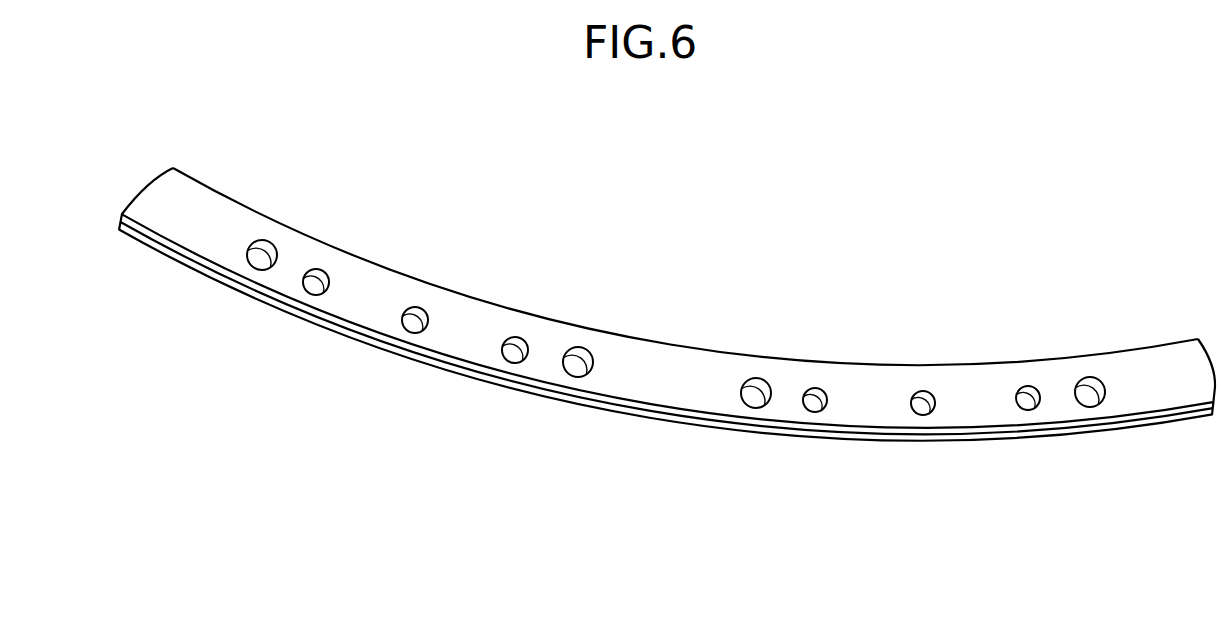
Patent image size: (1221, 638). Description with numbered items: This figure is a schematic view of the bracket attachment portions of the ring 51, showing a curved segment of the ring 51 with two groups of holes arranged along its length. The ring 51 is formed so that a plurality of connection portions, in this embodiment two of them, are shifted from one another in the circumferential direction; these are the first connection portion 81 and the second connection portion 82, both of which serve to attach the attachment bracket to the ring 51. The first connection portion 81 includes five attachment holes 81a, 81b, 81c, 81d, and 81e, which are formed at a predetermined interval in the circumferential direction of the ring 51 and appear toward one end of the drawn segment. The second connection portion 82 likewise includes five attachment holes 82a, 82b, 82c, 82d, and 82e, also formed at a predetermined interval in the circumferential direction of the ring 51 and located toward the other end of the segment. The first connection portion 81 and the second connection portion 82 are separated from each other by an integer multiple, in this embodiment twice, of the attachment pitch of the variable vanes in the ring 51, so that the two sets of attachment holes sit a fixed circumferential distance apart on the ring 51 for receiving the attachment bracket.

The ring 51 is at (1170, 340).
The first connection portion 81 is at (933, 477).
The attachment hole 81a is at (763, 407).
The attachment hole 81b is at (824, 412).
The attachment hole 81c is at (932, 414).
The attachment hole 81d is at (1035, 410).
The attachment hole 81e is at (1099, 447).
The second connection portion 82 is at (398, 387).
The attachment hole 82a is at (268, 270).
The attachment hole 82b is at (323, 295).
The attachment hole 82c is at (418, 333).
The attachment hole 82d is at (519, 363).
The attachment hole 82e is at (565, 411).